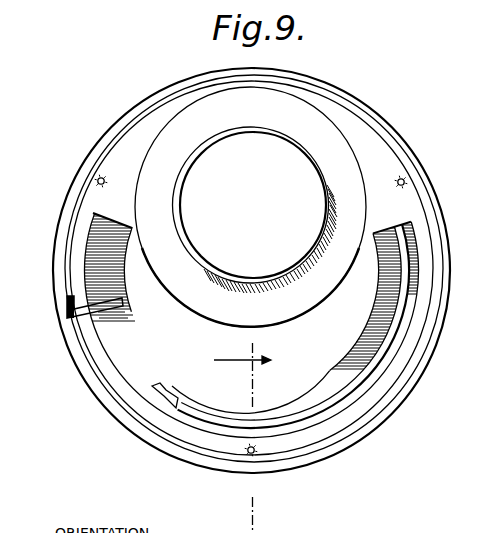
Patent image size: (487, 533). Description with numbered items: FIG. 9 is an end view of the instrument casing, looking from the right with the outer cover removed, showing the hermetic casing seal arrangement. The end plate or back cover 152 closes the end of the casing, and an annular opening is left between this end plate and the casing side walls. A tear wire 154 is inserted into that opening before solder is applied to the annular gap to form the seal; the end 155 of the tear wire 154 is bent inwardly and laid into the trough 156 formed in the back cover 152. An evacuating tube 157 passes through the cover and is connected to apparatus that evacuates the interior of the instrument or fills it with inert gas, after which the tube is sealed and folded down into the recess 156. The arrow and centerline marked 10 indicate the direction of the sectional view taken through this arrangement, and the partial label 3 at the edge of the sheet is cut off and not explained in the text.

The back cover 152 is at (373, 152).
The tear wire 154 is at (78, 200).
The end of the tear wire 155 is at (123, 305).
The trough 156 is at (130, 368).
The evacuating tube 157 is at (360, 387).
The section line 10 is at (231, 438).
The partial numeral 3 is at (476, 364).